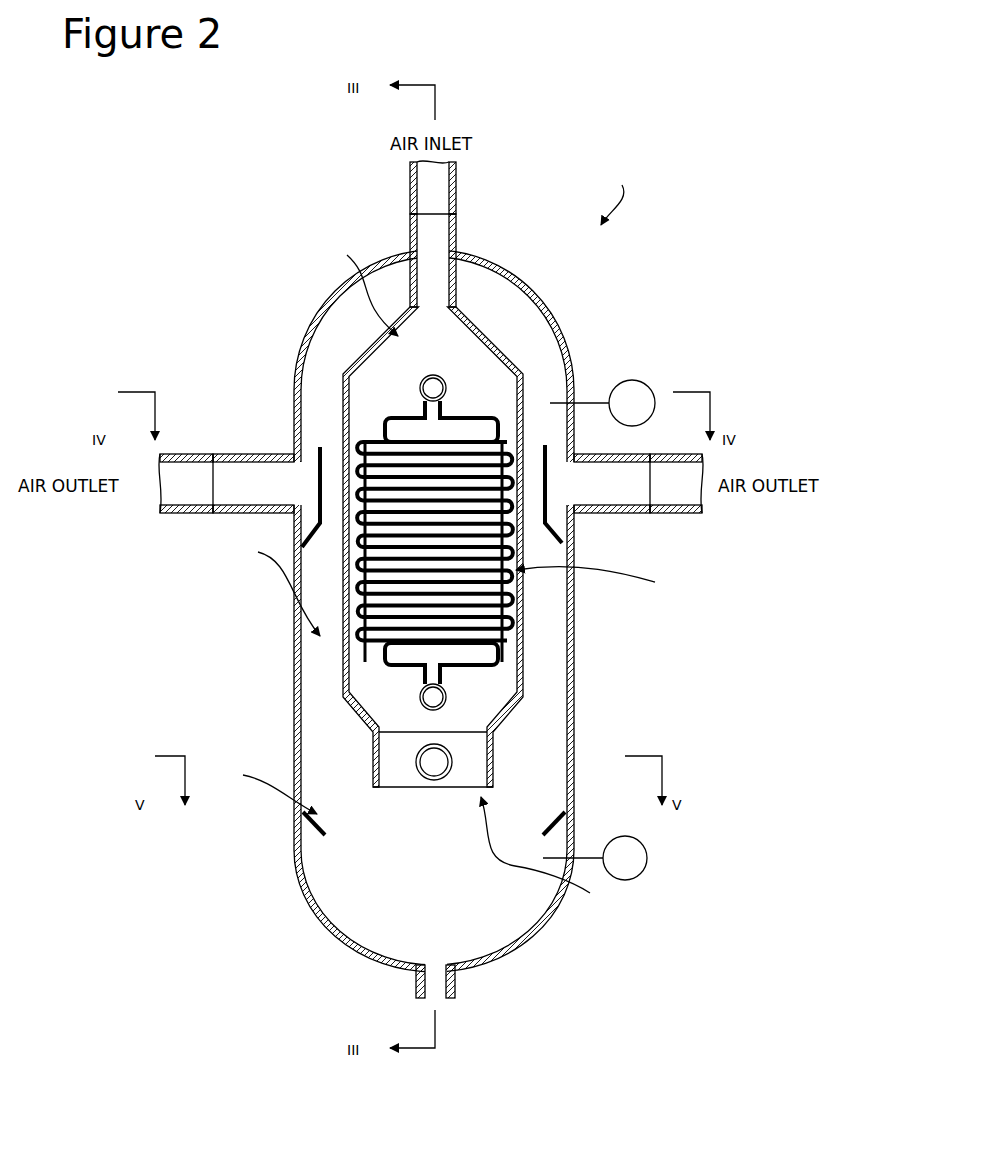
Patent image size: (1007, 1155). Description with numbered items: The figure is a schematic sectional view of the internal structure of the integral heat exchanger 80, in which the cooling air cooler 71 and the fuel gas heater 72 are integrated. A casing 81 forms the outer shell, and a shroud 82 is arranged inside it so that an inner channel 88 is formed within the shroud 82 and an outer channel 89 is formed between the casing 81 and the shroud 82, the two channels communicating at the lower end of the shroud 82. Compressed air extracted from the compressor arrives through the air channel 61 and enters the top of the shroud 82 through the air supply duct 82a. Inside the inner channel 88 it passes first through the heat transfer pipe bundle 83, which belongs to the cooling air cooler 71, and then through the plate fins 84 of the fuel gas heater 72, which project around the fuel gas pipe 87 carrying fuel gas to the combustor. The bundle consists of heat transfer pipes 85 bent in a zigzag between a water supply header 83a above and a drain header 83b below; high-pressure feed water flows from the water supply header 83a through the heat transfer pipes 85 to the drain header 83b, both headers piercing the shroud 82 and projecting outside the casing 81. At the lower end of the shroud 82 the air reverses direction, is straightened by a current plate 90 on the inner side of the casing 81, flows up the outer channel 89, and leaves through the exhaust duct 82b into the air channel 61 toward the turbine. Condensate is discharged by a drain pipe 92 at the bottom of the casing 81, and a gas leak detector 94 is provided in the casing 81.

The air channel 61 is at (412, 192).
The cooling air cooler 71 is at (600, 585).
The fuel gas heater 72 is at (547, 853).
The integral heat exchanger 80 is at (641, 181).
The casing 81 is at (316, 307).
The shroud 82 is at (492, 336).
The air supply duct 82a is at (457, 238).
The exhaust duct 82b is at (258, 455).
The heat transfer pipe bundle 83 is at (507, 582).
The water supply header 83a is at (424, 380).
The drain header 83b is at (445, 704).
The plate fins 84 is at (415, 790).
The heat transfer pipes 85 is at (399, 420).
The fuel gas pipe 87 is at (445, 788).
The inner channel 88 is at (360, 284).
The outer channel 89 is at (277, 585).
The current plate 90 is at (268, 787).
The drain pipe 92 is at (457, 990).
The gas leak detector 94 is at (645, 384).